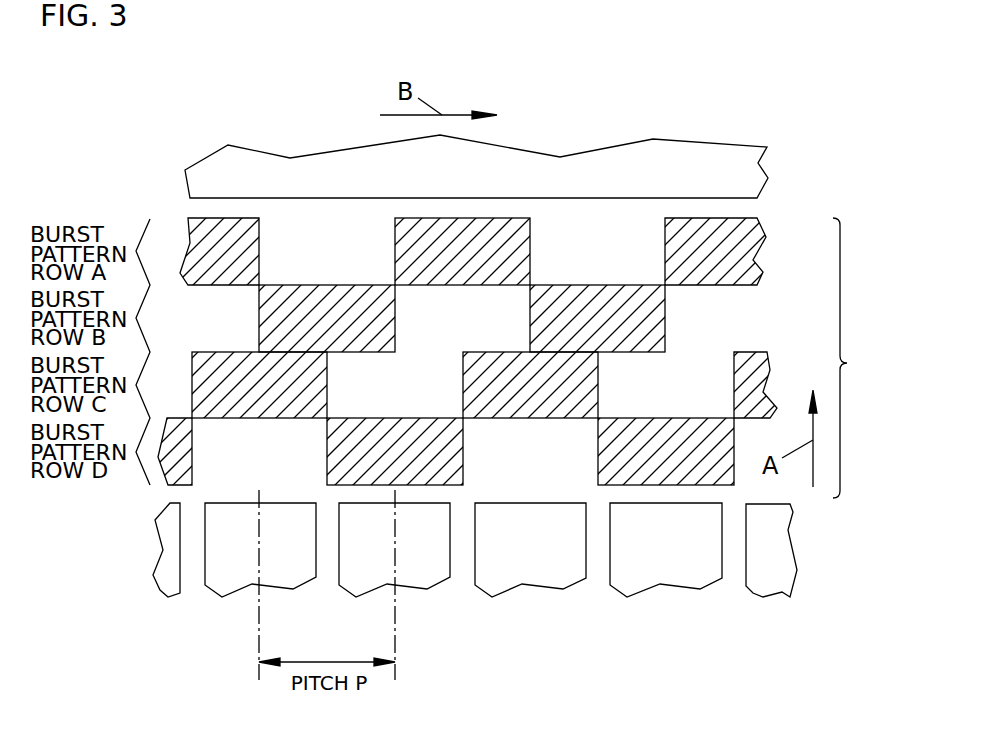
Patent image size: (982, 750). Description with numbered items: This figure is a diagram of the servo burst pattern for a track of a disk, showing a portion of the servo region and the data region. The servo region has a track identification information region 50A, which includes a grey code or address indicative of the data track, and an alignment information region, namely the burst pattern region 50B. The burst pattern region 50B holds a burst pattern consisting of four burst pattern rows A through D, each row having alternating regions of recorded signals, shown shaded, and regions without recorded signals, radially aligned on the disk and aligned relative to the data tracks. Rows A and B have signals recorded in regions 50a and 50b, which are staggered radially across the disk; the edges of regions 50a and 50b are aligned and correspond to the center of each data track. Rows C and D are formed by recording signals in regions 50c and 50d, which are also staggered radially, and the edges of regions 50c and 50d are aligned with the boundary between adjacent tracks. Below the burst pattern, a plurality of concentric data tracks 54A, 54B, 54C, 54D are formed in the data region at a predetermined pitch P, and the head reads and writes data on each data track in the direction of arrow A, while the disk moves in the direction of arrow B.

The track identification information region 50A is at (656, 186).
The burst pattern region 50B is at (868, 358).
The signal recorded region of burst pattern row A 50a is at (202, 262).
The signal recorded region of burst pattern row B 50b is at (306, 329).
The signal recorded region of burst pattern row C 50c is at (239, 396).
The signal recorded region of burst pattern row D 50d is at (374, 462).
The data track 54A is at (227, 585).
The data track 54B is at (422, 573).
The data track 54C is at (541, 569).
The data track 54D is at (668, 569).